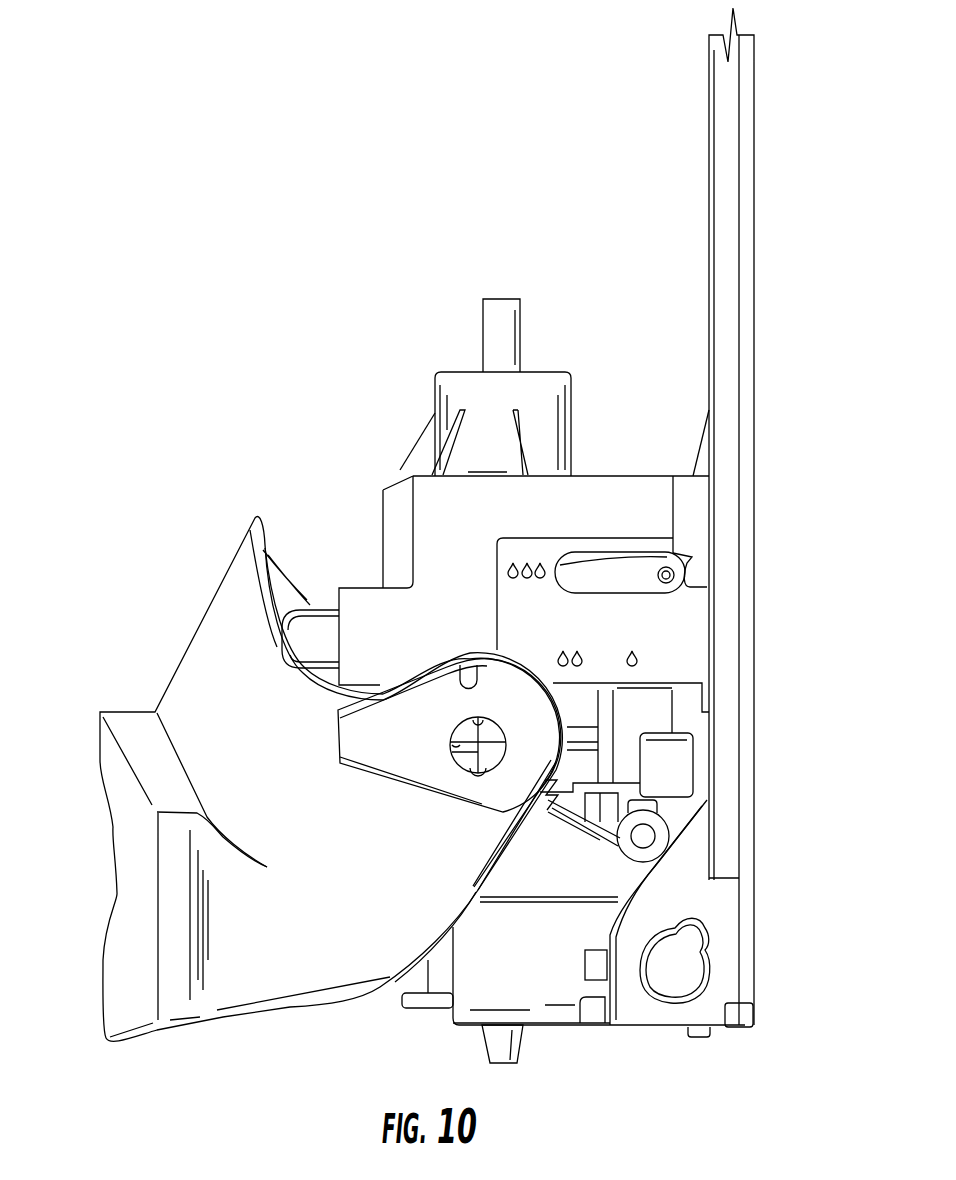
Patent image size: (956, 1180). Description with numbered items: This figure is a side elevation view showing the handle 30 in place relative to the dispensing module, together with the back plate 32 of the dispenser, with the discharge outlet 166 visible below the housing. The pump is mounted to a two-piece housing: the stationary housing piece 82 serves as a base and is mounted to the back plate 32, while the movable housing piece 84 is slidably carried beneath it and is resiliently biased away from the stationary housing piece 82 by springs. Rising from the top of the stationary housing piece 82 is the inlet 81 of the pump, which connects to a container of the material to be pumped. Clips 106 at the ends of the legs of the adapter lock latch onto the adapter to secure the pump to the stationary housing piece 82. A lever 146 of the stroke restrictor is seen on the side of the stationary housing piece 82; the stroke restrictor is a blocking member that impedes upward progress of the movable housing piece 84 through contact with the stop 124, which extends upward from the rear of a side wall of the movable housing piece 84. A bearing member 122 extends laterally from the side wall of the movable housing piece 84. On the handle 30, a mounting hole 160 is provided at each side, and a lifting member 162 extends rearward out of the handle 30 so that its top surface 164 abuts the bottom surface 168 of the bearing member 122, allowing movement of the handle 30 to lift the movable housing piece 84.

The handle 30 is at (190, 665).
The back plate 32 is at (747, 440).
The inlet 81 is at (523, 362).
The stationary housing piece 82 is at (427, 497).
The movable housing piece 84 is at (500, 973).
The clips 106 is at (316, 630).
The bearing member 122 is at (608, 848).
The stop 124 is at (670, 760).
The lever 146 is at (582, 578).
The mounting hole 160 is at (450, 740).
The lifting member 162 is at (502, 888).
The top surface 164 is at (545, 785).
The discharge outlet 166 is at (503, 1045).
The bottom surface 168 is at (523, 853).